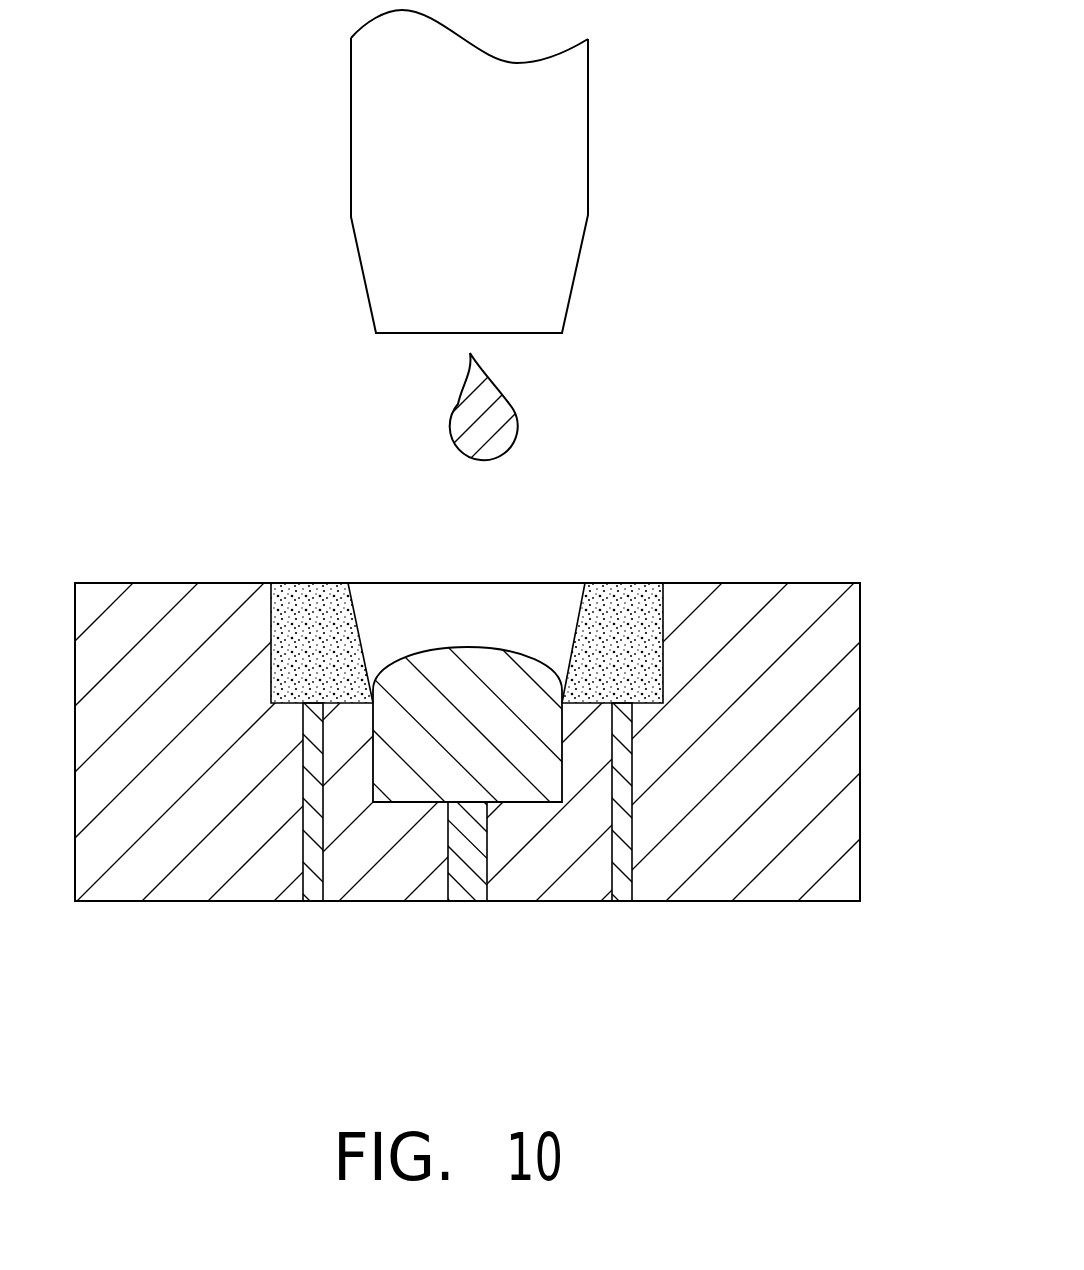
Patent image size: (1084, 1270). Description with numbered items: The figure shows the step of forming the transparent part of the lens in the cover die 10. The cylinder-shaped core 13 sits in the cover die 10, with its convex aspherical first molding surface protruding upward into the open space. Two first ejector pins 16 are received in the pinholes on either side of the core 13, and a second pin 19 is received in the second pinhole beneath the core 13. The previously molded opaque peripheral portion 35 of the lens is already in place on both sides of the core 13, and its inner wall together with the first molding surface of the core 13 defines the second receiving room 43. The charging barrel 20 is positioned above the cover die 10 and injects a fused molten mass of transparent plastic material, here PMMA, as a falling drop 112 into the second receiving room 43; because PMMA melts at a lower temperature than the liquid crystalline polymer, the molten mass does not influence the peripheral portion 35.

The cover die 10 is at (820, 780).
The core 13 is at (517, 780).
The first ejector pins 16 is at (312, 878).
The second pin 19 is at (463, 880).
The charging barrel 20 is at (560, 170).
The peripheral portion 35 is at (632, 612).
The second receiving room 43 is at (438, 613).
The encapsulant droplet 112 is at (512, 402).